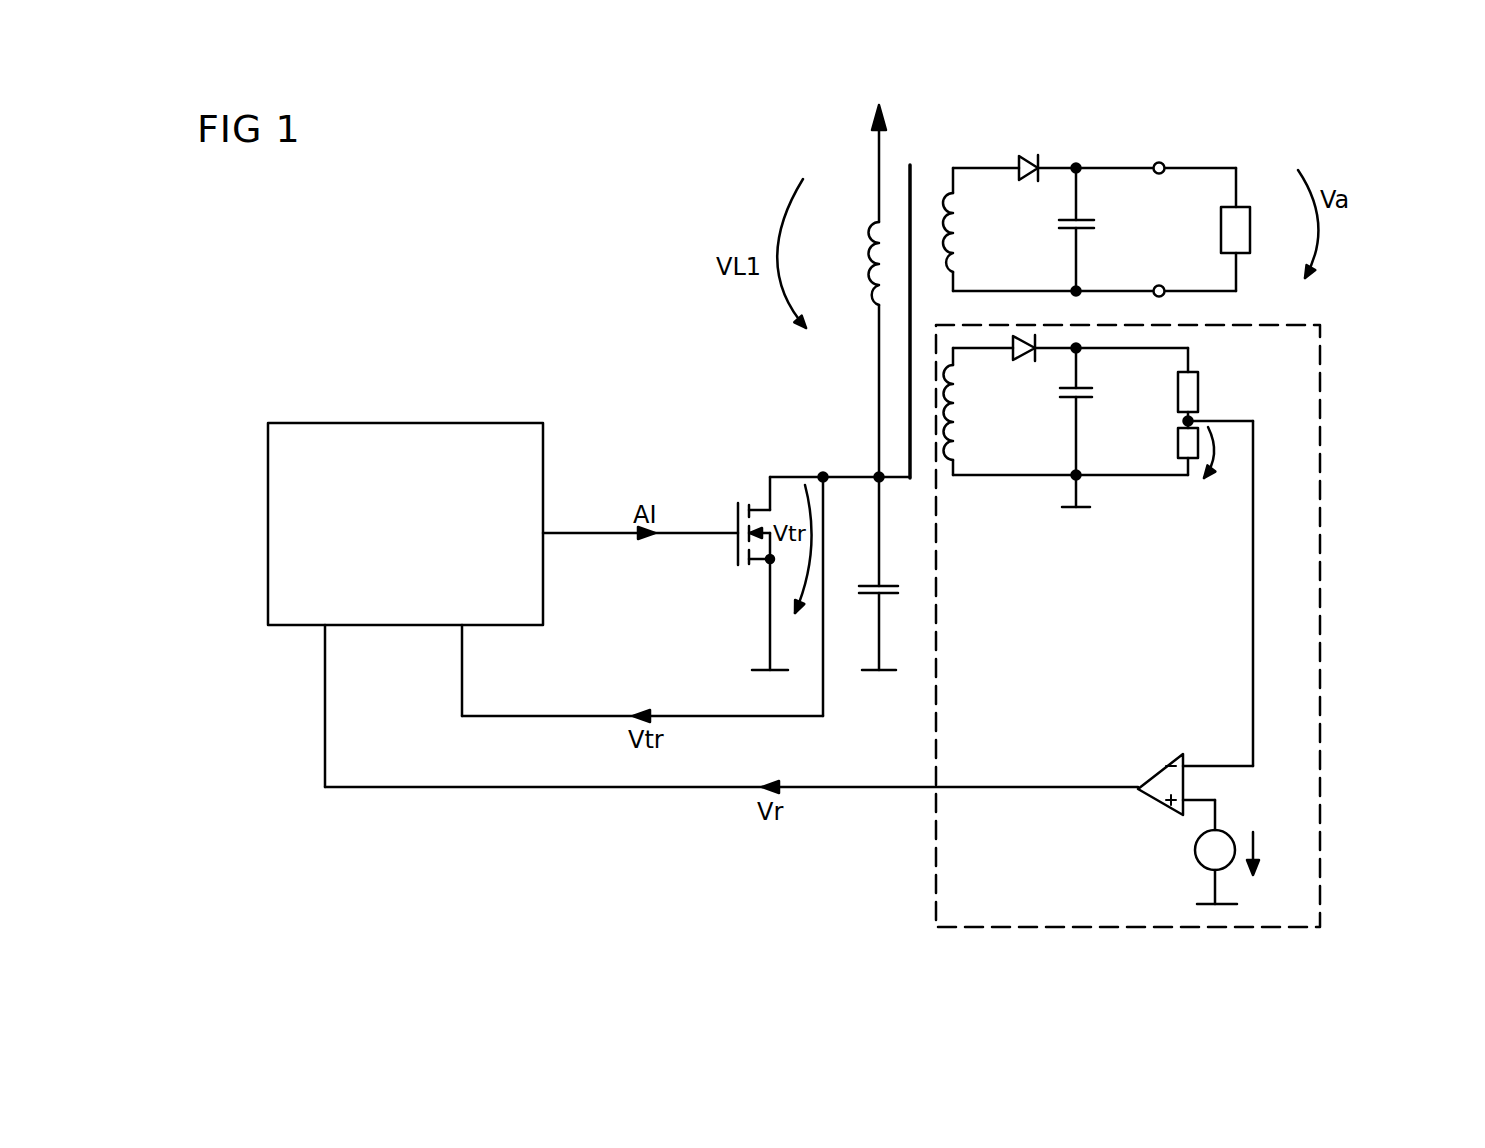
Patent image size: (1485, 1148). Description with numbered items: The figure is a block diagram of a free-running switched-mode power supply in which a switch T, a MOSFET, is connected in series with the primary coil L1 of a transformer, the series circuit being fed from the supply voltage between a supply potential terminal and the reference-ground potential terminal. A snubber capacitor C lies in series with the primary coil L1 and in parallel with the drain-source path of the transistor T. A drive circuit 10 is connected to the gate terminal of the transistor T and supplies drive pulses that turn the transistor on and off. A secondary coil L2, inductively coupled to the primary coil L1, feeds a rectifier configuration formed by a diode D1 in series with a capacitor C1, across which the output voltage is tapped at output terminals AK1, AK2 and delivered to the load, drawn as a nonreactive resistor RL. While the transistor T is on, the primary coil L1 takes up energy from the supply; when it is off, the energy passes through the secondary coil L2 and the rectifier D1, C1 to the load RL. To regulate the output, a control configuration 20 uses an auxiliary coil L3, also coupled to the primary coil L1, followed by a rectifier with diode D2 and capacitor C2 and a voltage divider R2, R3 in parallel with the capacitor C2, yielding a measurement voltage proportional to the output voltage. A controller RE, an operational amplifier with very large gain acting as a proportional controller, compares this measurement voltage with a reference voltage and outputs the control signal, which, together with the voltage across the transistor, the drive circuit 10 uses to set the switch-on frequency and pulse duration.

The drive circuit 10 is at (374, 465).
The control configuration 20 is at (1322, 437).
The switch T is at (754, 568).
The primary coil L1 is at (861, 288).
The secondary coil L2 is at (965, 229).
The auxiliary coil L3 is at (969, 411).
The snubber capacitor C is at (889, 573).
The capacitor C1 is at (1098, 229).
The capacitor C2 is at (1095, 411).
The diode D1 is at (1033, 152).
The diode D2 is at (1025, 368).
The load RL is at (1254, 229).
The voltage divider resistor R2 is at (1207, 388).
The voltage divider resistor R3 is at (1168, 451).
The controller RE is at (1150, 783).
The output terminal AK1 is at (1161, 149).
The output terminal AK2 is at (1159, 307).